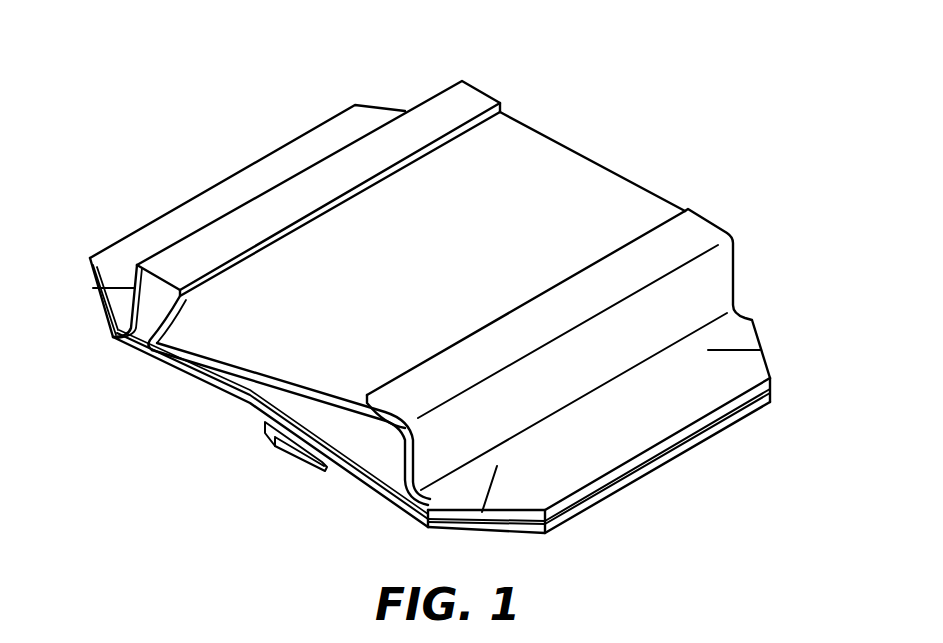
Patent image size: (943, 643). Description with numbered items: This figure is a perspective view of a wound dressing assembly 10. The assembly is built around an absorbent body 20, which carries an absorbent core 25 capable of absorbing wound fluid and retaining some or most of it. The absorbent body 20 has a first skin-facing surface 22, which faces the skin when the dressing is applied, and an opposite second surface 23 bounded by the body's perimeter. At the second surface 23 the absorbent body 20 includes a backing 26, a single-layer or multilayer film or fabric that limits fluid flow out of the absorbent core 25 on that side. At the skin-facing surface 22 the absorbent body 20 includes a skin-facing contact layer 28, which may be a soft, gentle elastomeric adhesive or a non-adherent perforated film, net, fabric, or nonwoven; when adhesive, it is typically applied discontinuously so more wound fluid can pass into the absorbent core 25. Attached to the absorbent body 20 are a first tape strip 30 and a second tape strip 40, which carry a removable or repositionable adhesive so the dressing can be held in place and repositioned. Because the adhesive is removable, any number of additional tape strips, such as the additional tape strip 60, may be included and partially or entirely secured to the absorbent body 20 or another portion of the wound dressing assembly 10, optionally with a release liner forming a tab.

The wound dressing assembly 10 is at (192, 38).
The absorbent body 20 is at (552, 182).
The first skin-facing surface 22 is at (183, 430).
The second surface 23 is at (505, 62).
The absorbent core 25 is at (167, 327).
The backing 26 is at (213, 298).
The skin-facing contact layer 28 is at (178, 368).
The first tape strip 30 is at (223, 195).
The second tape strip 40 is at (723, 380).
The additional tape strip 60 is at (310, 465).